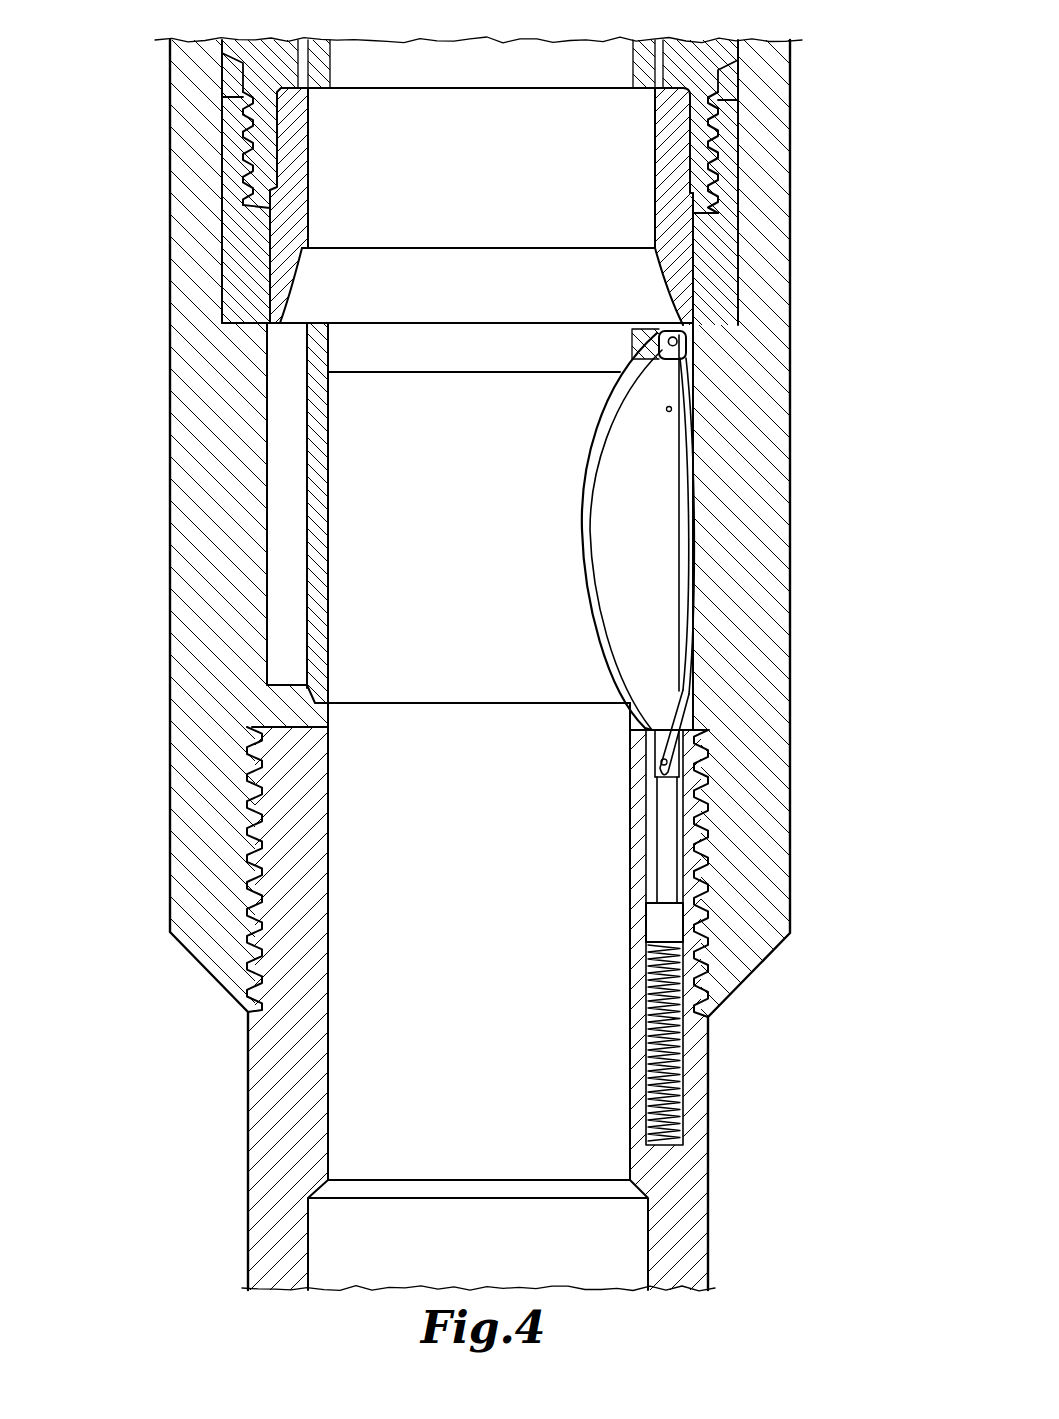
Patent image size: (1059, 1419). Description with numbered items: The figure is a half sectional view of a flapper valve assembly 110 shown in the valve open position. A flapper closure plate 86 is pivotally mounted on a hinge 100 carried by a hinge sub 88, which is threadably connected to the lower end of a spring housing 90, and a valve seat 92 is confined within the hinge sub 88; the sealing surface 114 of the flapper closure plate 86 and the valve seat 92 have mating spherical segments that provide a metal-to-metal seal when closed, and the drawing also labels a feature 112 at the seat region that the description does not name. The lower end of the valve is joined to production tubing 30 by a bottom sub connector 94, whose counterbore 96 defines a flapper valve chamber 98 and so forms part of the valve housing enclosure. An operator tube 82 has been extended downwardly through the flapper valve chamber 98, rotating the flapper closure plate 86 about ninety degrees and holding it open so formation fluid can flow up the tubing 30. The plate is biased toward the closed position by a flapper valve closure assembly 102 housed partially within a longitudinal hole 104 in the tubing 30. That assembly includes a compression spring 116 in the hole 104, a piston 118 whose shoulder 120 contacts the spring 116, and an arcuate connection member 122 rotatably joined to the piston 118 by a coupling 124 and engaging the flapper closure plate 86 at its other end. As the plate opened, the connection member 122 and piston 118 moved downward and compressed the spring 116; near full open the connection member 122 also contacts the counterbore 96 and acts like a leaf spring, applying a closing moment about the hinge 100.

The production tubing 30 is at (269, 1040).
The operator tube 82 is at (313, 493).
The flapper closure plate 86 is at (656, 434).
The hinge sub 88 is at (237, 287).
The spring housing 90 is at (258, 69).
The valve seat 92 is at (292, 174).
The bottom sub connector 94 is at (187, 387).
The counterbore 96 is at (270, 625).
The flapper valve chamber 98 is at (287, 555).
The hinge 100 is at (690, 353).
The flapper valve closure assembly 102 is at (630, 933).
The longitudinal hole 104 is at (692, 895).
The flapper valve assembly 110 is at (836, 99).
The flared seat 112 is at (301, 272).
The sealing surface 114 is at (595, 655).
The compression spring 116 is at (680, 1041).
The piston 118 is at (665, 853).
The shoulder 120 is at (667, 930).
The connection member 122 is at (682, 475).
The coupling 124 is at (680, 758).